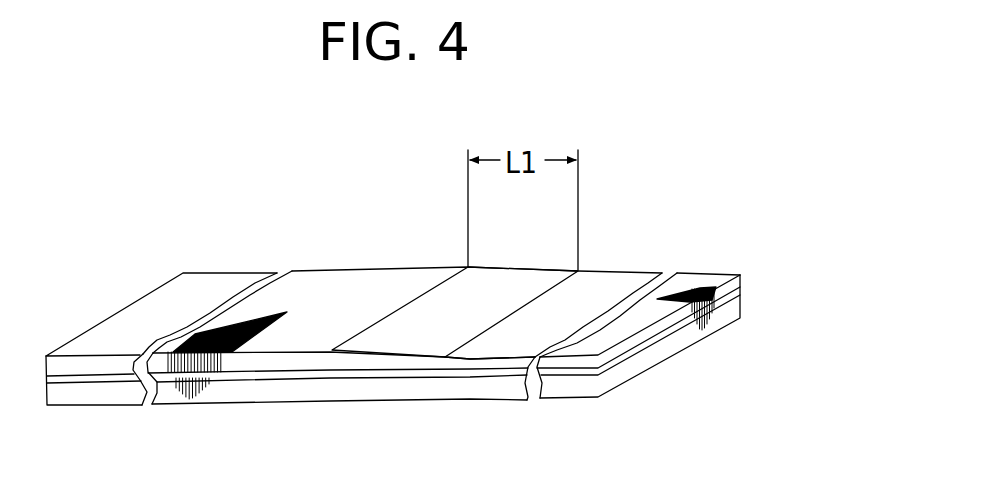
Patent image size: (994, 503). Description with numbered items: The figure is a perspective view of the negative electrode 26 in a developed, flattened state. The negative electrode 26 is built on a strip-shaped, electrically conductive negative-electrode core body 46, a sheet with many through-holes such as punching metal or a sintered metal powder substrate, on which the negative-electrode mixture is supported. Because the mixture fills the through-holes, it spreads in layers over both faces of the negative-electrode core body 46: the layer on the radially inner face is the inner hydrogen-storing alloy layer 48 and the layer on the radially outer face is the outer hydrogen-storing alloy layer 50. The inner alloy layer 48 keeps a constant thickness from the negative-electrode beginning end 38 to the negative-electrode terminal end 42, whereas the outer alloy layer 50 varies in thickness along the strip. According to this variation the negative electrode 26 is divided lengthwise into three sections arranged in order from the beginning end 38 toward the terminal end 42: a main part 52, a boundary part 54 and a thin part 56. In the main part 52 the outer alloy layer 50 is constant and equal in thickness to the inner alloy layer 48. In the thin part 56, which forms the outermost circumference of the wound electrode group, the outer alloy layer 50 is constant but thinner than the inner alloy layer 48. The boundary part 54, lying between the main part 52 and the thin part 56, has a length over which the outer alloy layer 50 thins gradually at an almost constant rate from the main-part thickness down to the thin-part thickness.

The negative electrode 26 is at (708, 198).
The negative-electrode beginning end 38 is at (65, 395).
The negative-electrode terminal end 42 is at (585, 385).
The negative-electrode core body 46 is at (742, 287).
The inner hydrogen-storing alloy layer 48 is at (723, 312).
The outer hydrogen-storing alloy layer 50 is at (742, 278).
The main part 52 is at (220, 392).
The boundary part 54 is at (385, 388).
The thin part 56 is at (492, 387).